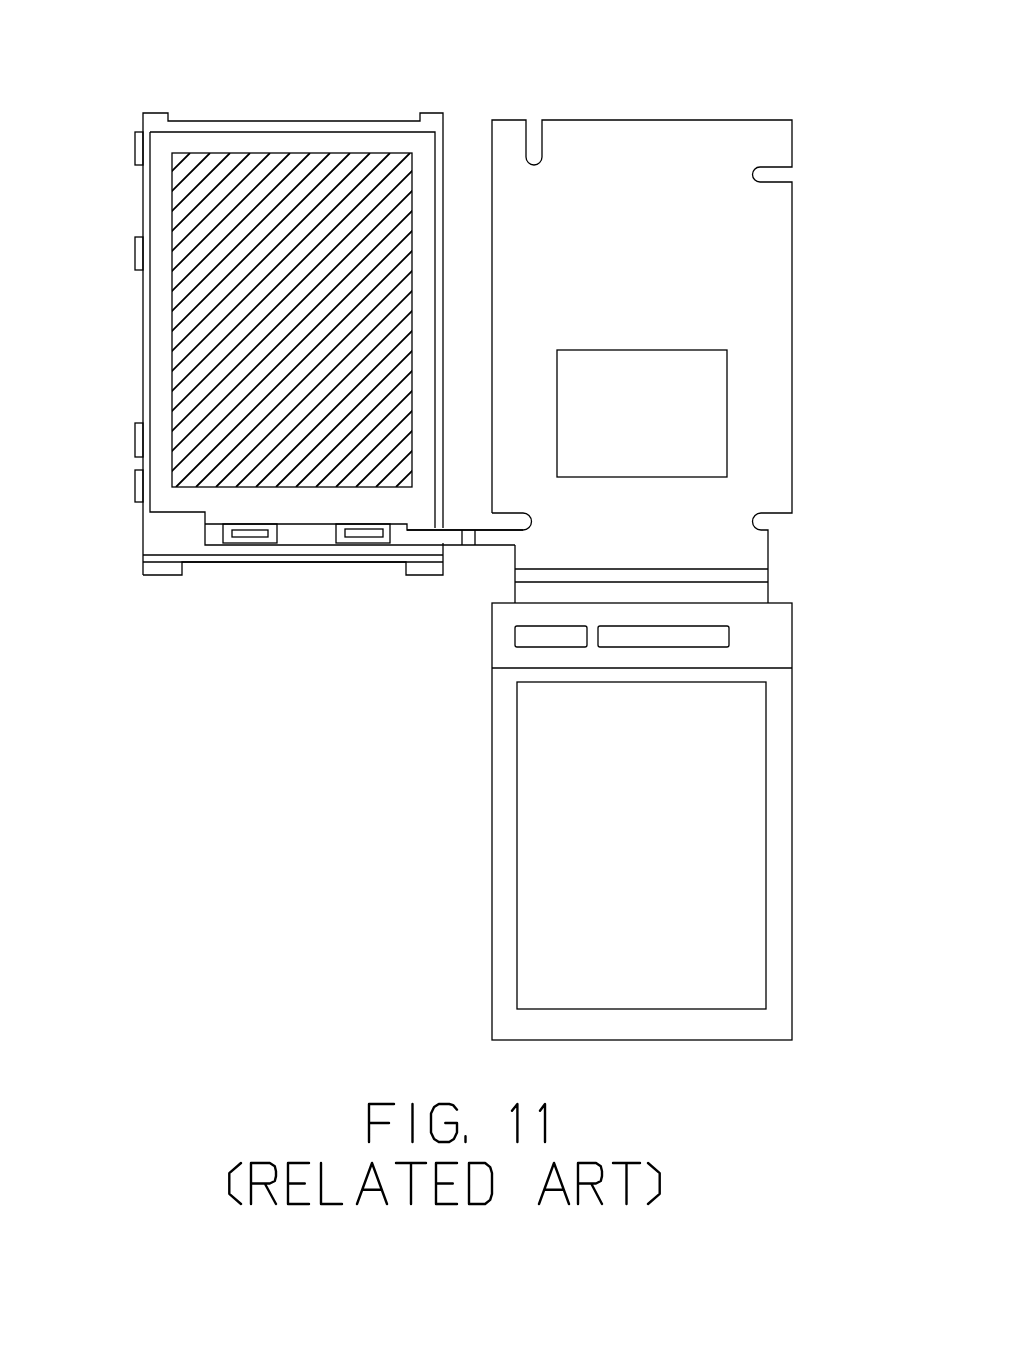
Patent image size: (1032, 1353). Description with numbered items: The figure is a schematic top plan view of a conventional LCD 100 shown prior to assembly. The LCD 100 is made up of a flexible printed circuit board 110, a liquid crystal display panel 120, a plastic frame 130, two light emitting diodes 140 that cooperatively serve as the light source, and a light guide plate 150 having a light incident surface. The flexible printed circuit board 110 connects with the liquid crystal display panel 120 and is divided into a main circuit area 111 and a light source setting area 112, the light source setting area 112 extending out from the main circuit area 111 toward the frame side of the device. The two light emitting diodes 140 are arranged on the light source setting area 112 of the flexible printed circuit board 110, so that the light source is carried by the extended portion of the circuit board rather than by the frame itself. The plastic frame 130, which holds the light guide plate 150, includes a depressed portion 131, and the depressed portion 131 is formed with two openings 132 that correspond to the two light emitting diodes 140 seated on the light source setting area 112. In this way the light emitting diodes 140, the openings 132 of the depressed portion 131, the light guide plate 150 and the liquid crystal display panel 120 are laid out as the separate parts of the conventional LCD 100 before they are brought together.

The conventional LCD 100 is at (435, 18).
The flexible printed circuit board 110 is at (802, 311).
The main circuit area 111 is at (757, 388).
The light source setting area 112 is at (320, 536).
The liquid crystal display panel 120 is at (730, 762).
The plastic frame 130 is at (158, 535).
The depressed portion 131 is at (227, 515).
The openings 132 is at (265, 536).
The light emitting diodes 140 is at (251, 534).
The light guide plate 150 is at (200, 368).